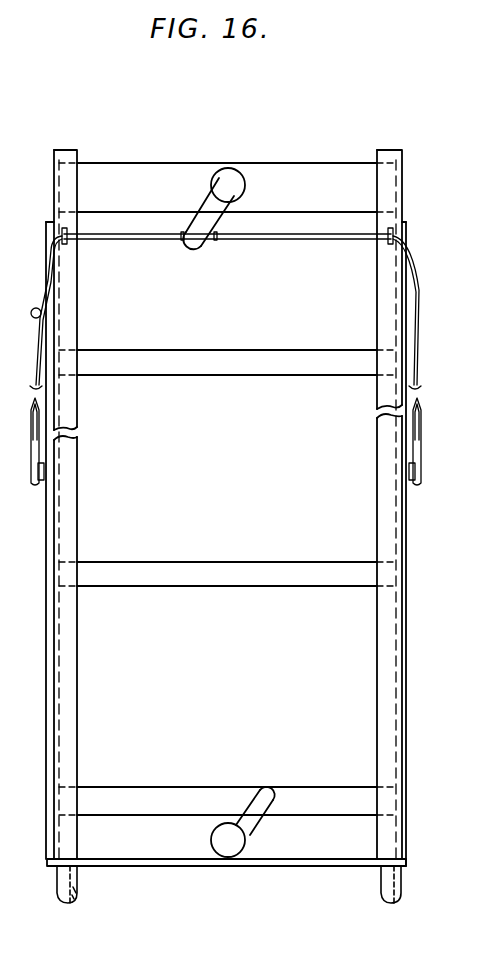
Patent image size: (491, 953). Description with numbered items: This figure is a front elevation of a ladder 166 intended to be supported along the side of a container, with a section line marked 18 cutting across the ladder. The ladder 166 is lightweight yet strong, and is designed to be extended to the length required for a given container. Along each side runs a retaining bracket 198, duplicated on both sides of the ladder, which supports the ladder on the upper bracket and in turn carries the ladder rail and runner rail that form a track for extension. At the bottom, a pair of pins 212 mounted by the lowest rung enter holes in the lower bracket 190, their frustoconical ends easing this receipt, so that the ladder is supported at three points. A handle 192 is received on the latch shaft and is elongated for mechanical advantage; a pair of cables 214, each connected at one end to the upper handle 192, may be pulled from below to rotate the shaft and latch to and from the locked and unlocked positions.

The ladder 166 is at (242, 540).
The retaining bracket 198 is at (50, 680).
The lower bracket 190 is at (193, 867).
The pins 212 is at (58, 876).
The handle 192 is at (218, 222).
The cables 214 is at (48, 312).
The section line 18- 18 is at (158, 522).